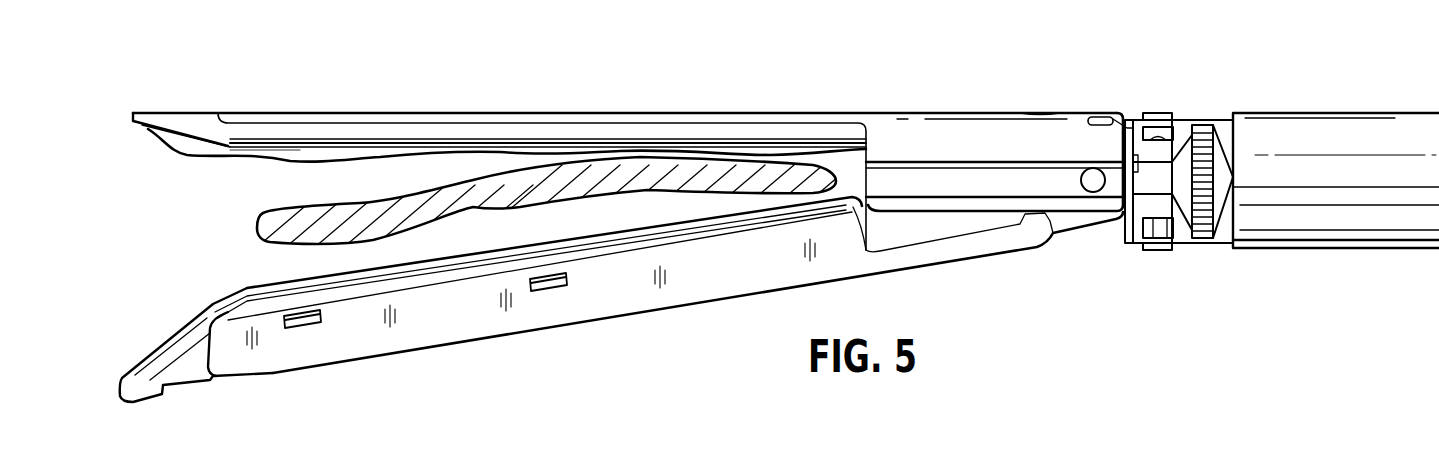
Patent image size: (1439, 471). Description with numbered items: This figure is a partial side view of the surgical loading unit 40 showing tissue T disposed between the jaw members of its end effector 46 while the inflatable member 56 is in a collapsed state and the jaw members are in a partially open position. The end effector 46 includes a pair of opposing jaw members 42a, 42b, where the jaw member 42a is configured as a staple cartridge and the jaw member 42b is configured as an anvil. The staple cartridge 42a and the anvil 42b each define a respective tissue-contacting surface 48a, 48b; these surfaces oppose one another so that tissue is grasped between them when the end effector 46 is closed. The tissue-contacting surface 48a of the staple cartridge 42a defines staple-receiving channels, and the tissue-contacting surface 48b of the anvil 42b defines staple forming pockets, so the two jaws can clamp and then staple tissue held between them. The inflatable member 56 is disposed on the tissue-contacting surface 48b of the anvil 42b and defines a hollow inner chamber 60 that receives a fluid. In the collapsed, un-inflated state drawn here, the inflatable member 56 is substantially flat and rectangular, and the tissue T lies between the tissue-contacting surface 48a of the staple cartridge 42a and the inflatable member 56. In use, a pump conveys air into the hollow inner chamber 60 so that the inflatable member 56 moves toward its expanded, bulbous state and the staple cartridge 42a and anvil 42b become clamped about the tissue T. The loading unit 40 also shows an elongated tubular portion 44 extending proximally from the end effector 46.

The surgical loading unit 40 is at (1103, 79).
The jaw member / staple cartridge 42a is at (255, 360).
The jaw member / anvil 42b is at (212, 130).
The elongated body / shaft 44 is at (1285, 145).
The end effector 46 is at (582, 342).
The tissue-contacting surface 48a is at (247, 288).
The tissue-contacting surface 48b is at (150, 130).
The inflatable member 56 is at (317, 164).
The hollow inner chamber 60 is at (310, 153).
The tissue T is at (427, 210).